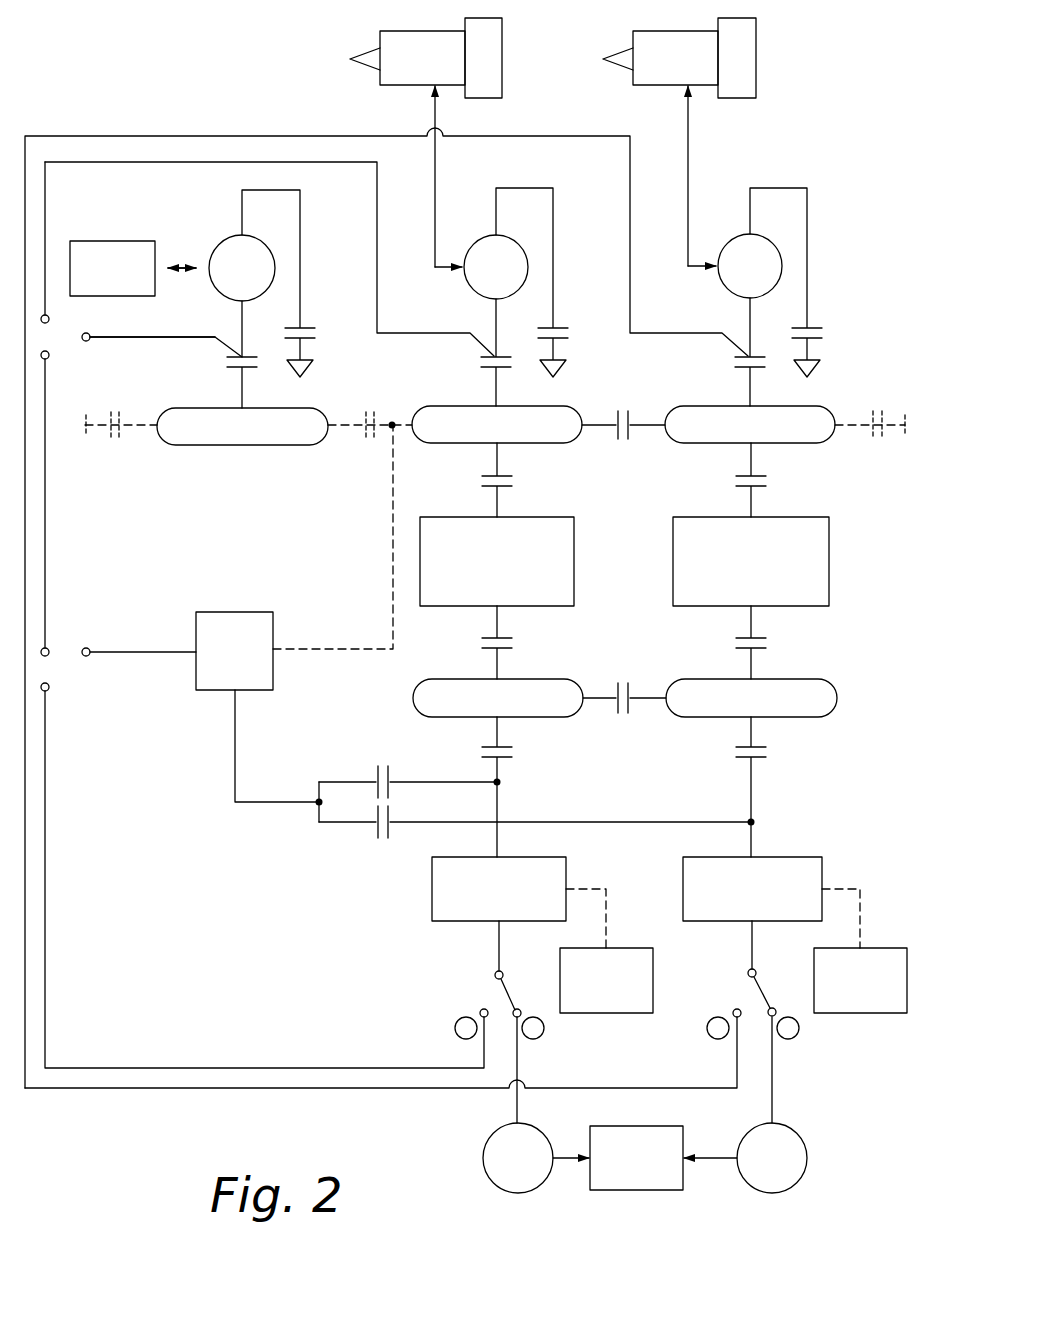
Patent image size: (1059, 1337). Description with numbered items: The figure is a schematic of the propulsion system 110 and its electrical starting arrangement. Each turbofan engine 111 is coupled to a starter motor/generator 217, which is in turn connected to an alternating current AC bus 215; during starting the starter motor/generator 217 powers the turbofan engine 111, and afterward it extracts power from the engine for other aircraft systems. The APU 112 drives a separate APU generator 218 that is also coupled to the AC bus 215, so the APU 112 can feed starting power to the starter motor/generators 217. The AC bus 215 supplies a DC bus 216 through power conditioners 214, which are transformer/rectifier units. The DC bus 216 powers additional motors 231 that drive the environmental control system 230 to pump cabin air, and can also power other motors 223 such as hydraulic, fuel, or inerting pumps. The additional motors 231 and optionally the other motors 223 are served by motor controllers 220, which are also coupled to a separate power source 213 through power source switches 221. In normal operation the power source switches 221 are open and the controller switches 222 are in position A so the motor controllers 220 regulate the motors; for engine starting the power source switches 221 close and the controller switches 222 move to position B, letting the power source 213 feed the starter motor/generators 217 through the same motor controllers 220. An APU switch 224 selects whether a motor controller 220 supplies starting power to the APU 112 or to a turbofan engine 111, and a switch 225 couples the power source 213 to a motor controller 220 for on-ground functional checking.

The propulsion system 110 is at (145, 60).
The turbofan engine 111 is at (505, 37).
The APU 112 is at (125, 241).
The power source 213 is at (212, 690).
The power conditioner 214 is at (545, 517).
The AC bus 215 is at (185, 480).
The DC bus 216 is at (855, 677).
The starter motor/generator 217 is at (470, 285).
The APU generator 218 is at (218, 245).
The motor controller 220 is at (452, 921).
The power source switch 221 is at (376, 760).
The controller switch 222 is at (483, 995).
The other motors 223 is at (610, 1013).
The APU switch 224 is at (68, 352).
The switch 225 is at (70, 633).
The environmental control system 230 is at (660, 1190).
The additional motors 231 is at (507, 1192).